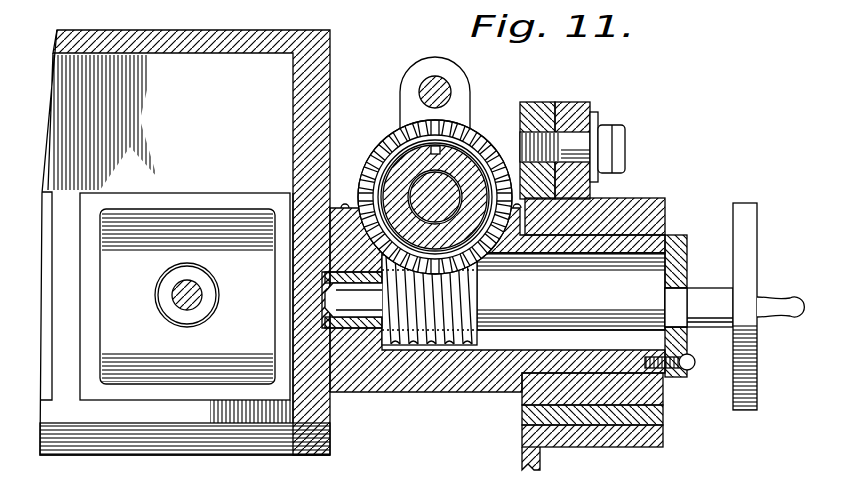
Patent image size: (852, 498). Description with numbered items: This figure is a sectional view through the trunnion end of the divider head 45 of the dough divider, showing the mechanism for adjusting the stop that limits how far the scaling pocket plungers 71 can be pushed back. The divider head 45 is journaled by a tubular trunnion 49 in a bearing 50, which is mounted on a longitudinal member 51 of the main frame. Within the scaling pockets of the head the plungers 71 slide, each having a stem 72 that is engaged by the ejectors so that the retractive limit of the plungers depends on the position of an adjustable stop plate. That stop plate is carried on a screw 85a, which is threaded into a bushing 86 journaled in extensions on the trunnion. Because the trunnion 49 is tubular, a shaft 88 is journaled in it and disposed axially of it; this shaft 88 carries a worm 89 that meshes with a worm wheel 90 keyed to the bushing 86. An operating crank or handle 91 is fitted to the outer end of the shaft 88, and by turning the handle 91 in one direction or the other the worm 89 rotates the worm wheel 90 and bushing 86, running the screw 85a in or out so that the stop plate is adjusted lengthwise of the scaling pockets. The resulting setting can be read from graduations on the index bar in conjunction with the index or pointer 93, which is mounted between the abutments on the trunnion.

The divider head 45 is at (296, 130).
The trunnion 49 is at (449, 383).
The bearing 50 is at (632, 207).
The longitudinal member 51 is at (600, 440).
The scaling pocket plunger 71 is at (185, 296).
The plunger stem 72 is at (205, 293).
The screw 85a is at (398, 182).
The bushing 86 is at (407, 182).
The shaft 88 is at (655, 293).
The worm 89 is at (482, 292).
The worm wheel 90 is at (462, 143).
The operating crank or handle 91 is at (754, 281).
The index or pointer 93 is at (456, 95).